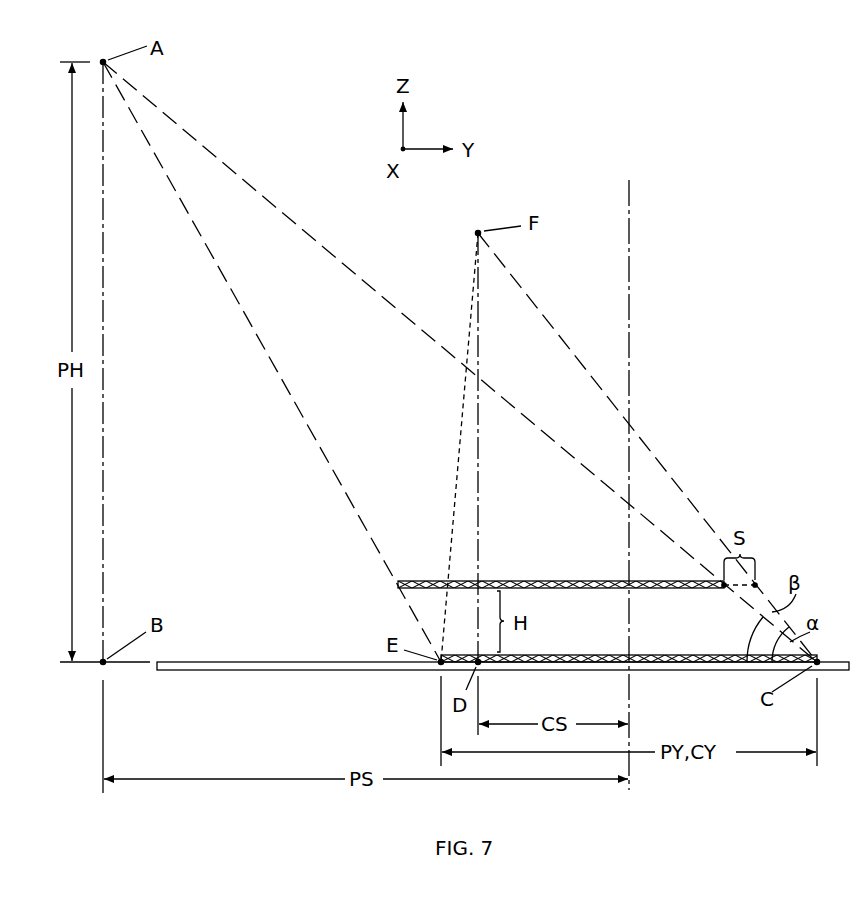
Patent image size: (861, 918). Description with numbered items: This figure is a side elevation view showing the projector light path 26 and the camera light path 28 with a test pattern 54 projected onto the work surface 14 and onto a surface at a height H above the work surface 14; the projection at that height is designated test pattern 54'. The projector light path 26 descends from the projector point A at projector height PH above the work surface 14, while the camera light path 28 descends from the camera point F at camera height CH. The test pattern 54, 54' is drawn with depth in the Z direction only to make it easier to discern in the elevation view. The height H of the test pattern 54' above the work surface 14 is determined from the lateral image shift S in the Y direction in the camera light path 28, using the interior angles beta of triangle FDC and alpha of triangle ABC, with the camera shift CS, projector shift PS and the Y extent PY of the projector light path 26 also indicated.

The work surface 14 is at (838, 662).
The projector light path 26 is at (368, 284).
The camera light path 28 is at (540, 311).
The test pattern 54 is at (629, 635).
The test pattern at height H 54' is at (561, 560).